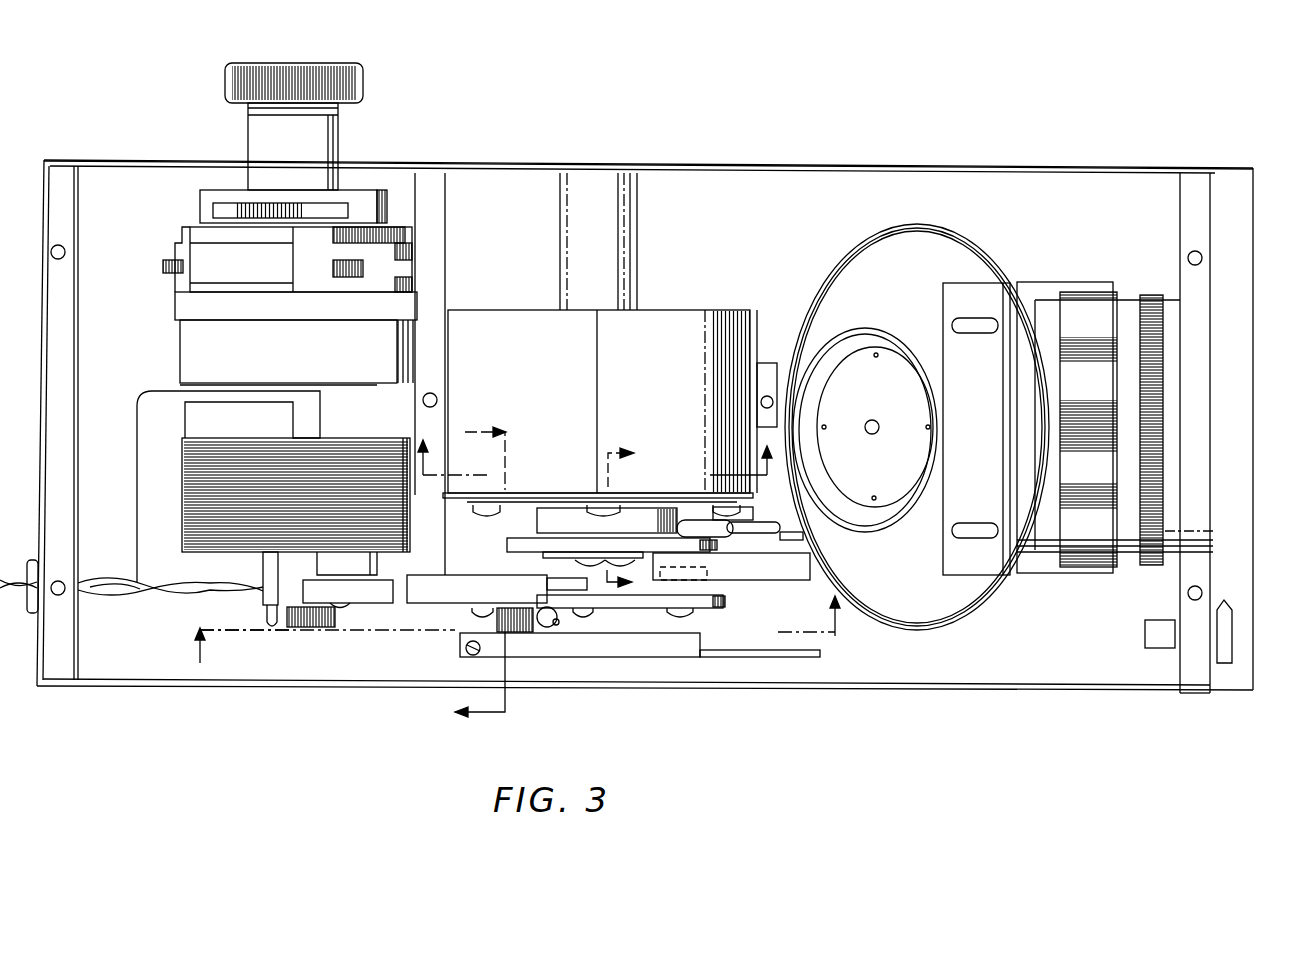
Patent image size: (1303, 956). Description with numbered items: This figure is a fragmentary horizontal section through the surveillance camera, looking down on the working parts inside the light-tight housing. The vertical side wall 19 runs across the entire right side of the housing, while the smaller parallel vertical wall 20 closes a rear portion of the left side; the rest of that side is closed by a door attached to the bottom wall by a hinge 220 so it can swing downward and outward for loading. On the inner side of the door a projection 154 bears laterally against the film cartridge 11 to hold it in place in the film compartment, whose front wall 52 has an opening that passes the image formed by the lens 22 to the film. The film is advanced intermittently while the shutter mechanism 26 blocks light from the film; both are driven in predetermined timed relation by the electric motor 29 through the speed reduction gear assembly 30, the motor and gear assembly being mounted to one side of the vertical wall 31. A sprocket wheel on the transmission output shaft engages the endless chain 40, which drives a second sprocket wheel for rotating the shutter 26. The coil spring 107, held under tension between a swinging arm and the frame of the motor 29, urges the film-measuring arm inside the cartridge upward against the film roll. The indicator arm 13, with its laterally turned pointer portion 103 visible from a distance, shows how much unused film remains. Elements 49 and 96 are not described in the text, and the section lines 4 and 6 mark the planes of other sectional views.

The vertical wall 20 is at (118, 160).
The hinge 220 is at (775, 162).
The vertical side wall 19 is at (175, 683).
The projection 154 is at (628, 208).
The support plate 49 is at (440, 258).
The cartridge 11 is at (610, 378).
The front wall 52 is at (768, 312).
The shutter mechanism 26 is at (822, 268).
The lens 22 is at (1130, 288).
The vertical wall 31 is at (178, 300).
The speed reduction gear assembly 30 is at (190, 348).
The electric motor 29 is at (160, 441).
The coil 96 is at (447, 556).
The coil spring 107 is at (318, 630).
The endless chain 40 is at (494, 538).
The indicator arm 13 is at (985, 650).
The pointer portion 103 is at (1230, 623).
The section line 4- 4 is at (508, 629).
The section line 6- 6 is at (595, 451).